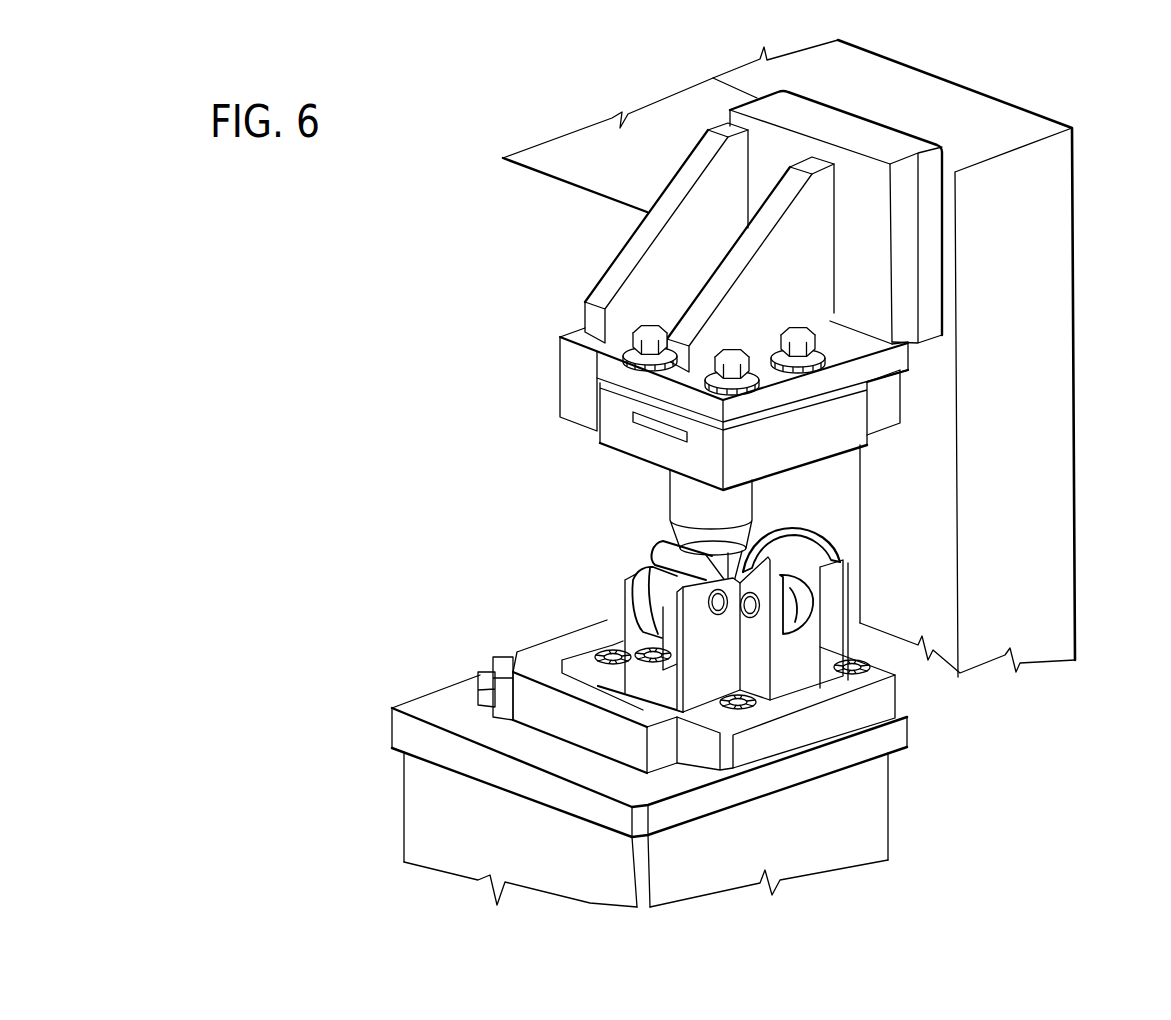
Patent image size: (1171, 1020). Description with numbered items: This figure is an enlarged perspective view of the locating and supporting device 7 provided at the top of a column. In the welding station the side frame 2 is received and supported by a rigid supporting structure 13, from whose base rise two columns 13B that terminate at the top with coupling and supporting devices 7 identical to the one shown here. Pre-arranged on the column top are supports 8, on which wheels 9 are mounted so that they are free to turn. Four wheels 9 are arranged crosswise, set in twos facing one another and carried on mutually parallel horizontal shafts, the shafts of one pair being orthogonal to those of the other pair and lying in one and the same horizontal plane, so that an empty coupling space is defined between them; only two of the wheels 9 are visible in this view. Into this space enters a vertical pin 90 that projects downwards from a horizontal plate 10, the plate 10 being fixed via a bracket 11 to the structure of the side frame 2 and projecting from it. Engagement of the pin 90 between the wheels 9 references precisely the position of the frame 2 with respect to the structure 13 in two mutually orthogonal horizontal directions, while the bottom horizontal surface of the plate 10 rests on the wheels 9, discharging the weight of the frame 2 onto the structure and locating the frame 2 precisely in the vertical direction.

The side frame 2 is at (1036, 95).
The bracket 11 is at (608, 276).
The horizontal plate 10 is at (823, 425).
The vertical pin 90 is at (683, 492).
The wheels 9 is at (677, 540).
The supports 8 is at (652, 547).
The locating and supporting device 7 is at (905, 690).
The columns 13B is at (437, 805).
The rigid supporting structure 13 is at (390, 868).